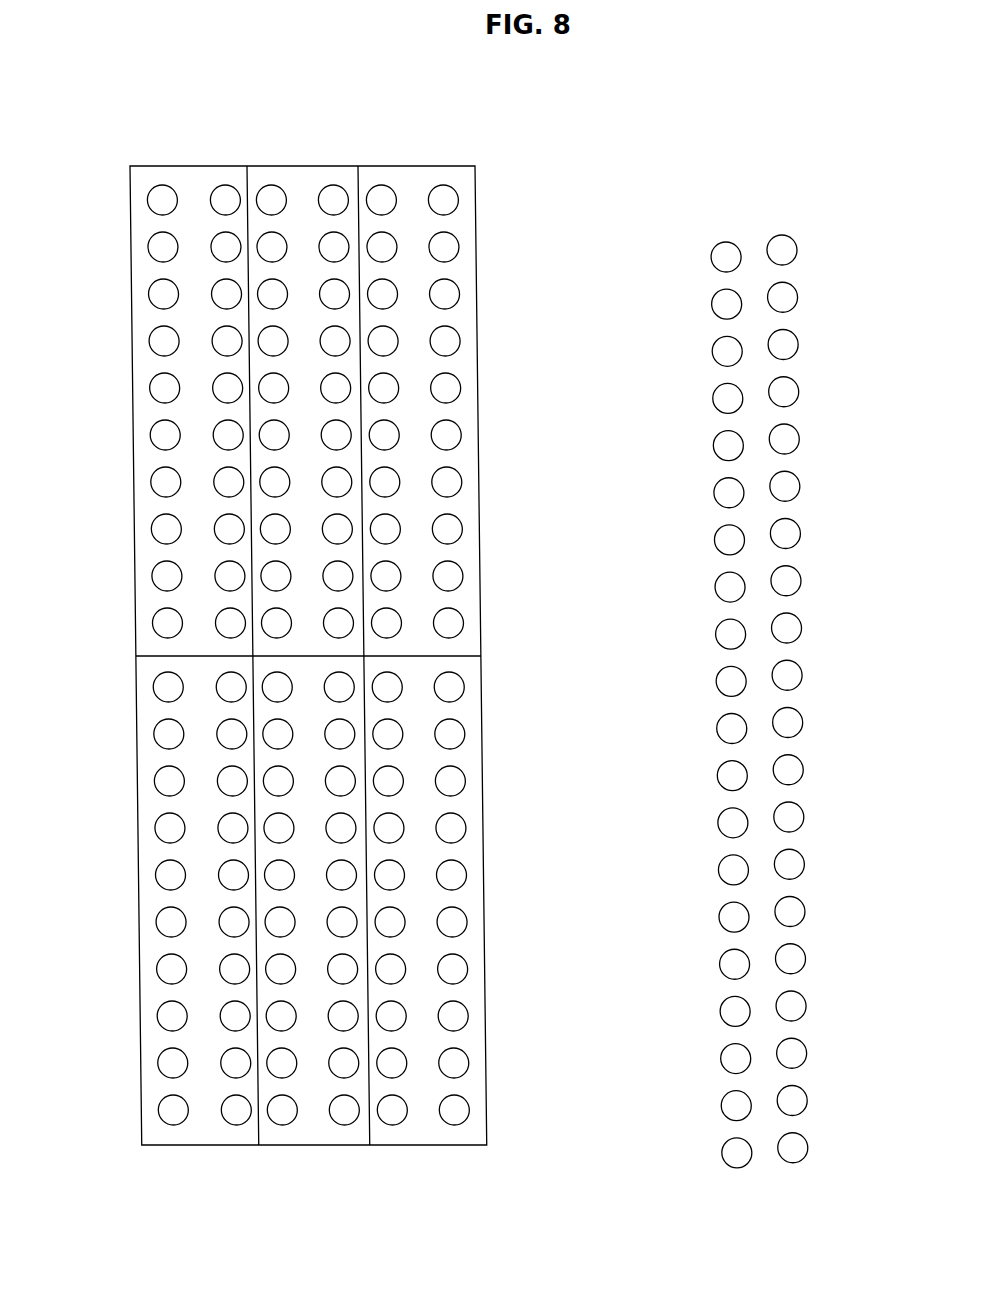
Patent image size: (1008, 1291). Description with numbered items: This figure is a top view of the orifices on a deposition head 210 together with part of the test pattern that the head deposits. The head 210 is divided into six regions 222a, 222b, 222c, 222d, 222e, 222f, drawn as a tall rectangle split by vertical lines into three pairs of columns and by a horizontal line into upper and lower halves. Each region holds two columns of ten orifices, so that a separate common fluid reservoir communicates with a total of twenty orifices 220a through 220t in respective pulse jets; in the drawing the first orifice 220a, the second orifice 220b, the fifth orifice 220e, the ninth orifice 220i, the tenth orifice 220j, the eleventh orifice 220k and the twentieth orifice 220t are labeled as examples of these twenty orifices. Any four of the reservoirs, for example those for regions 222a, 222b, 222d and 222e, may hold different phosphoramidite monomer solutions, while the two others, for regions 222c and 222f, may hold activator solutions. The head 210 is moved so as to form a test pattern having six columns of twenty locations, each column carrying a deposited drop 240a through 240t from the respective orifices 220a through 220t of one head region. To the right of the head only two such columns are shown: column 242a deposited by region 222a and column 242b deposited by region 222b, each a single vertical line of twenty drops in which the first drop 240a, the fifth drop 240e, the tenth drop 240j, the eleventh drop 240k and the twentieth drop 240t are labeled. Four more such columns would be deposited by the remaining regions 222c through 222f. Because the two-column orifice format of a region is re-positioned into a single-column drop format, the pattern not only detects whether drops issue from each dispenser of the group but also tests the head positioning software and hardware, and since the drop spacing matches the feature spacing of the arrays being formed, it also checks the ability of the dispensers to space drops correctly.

The head 210 is at (477, 385).
The orifice 220a is at (158, 199).
The orifice 220b is at (158, 249).
The orifice 220e is at (158, 390).
The orifice 220i is at (158, 578).
The orifice 220j is at (152, 625).
The orifice 220k is at (222, 190).
The orifice 220t is at (223, 630).
The region 222a is at (224, 173).
The region 222b is at (302, 178).
The region 222c is at (381, 166).
The region 222d is at (206, 1145).
The region 222e is at (300, 1148).
The region 222f is at (440, 1145).
The deposited drop 240a is at (725, 242).
The deposited drop 240e is at (713, 447).
The deposited drop 240j is at (718, 680).
The deposited drop 240k is at (718, 727).
The deposited drop 240t is at (722, 1153).
The column 242a is at (702, 247).
The column 242b is at (812, 250).